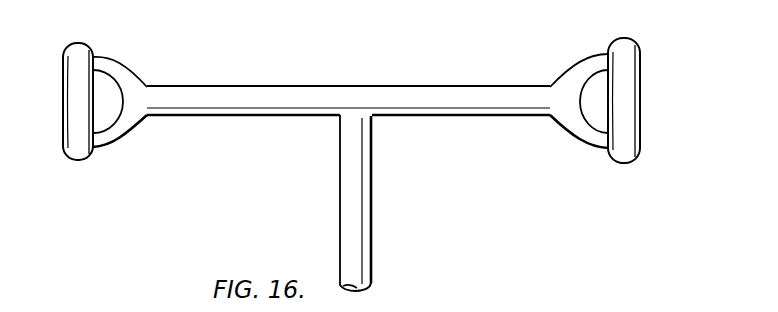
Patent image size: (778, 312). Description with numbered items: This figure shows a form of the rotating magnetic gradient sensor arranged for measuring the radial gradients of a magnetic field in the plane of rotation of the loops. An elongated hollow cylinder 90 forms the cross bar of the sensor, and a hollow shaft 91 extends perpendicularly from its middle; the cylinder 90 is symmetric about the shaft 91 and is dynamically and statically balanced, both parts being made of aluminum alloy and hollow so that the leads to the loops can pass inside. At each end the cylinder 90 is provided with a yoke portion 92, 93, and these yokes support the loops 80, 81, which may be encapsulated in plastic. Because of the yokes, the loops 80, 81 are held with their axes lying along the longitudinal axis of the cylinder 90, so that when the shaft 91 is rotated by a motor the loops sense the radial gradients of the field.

The loop 80 is at (630, 52).
The loop 81 is at (75, 135).
The elongated hollow cylinder 90 is at (483, 95).
The hollow shaft 91 is at (349, 183).
The yoke portion 92 is at (582, 68).
The yoke portion 93 is at (117, 130).